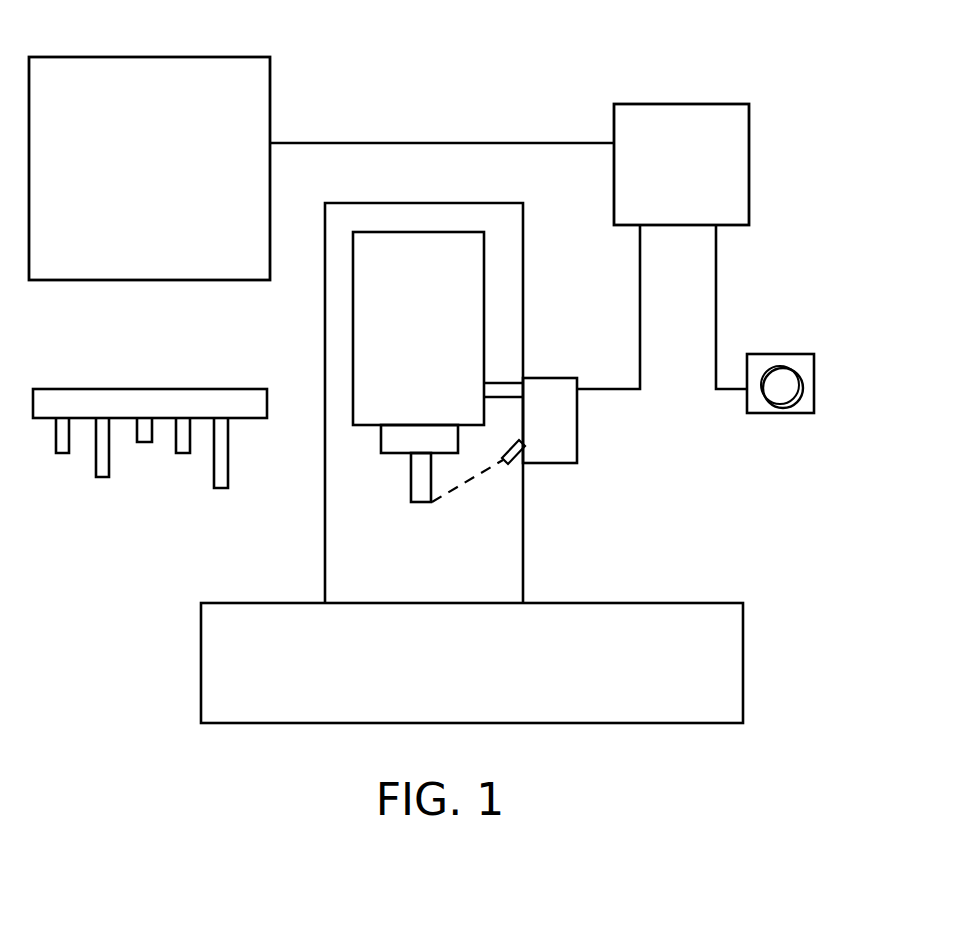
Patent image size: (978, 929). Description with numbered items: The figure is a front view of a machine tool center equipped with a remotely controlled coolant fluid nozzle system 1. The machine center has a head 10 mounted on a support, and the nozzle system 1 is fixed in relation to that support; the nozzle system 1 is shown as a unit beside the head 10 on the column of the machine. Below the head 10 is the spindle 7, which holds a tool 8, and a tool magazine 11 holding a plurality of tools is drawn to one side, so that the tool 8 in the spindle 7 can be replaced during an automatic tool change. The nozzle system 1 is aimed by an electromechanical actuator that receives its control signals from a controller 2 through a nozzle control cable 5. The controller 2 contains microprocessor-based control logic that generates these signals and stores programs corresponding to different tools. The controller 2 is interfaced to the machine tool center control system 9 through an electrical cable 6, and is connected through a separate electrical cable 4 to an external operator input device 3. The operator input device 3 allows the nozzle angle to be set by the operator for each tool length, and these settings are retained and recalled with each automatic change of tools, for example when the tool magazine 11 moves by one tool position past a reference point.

The remotely controlled coolant fluid nozzle system 1 is at (568, 423).
The controller 2 is at (712, 157).
The external operator input device 3 is at (794, 389).
The electrical cable 4 is at (727, 284).
The nozzle control cable 5 is at (620, 258).
The electrical cable 6 is at (443, 143).
The spindle 7 is at (397, 434).
The tool 8 is at (407, 477).
The machine tool center control system 9 is at (247, 90).
The head 10 is at (390, 303).
The tool magazine 11 is at (153, 398).